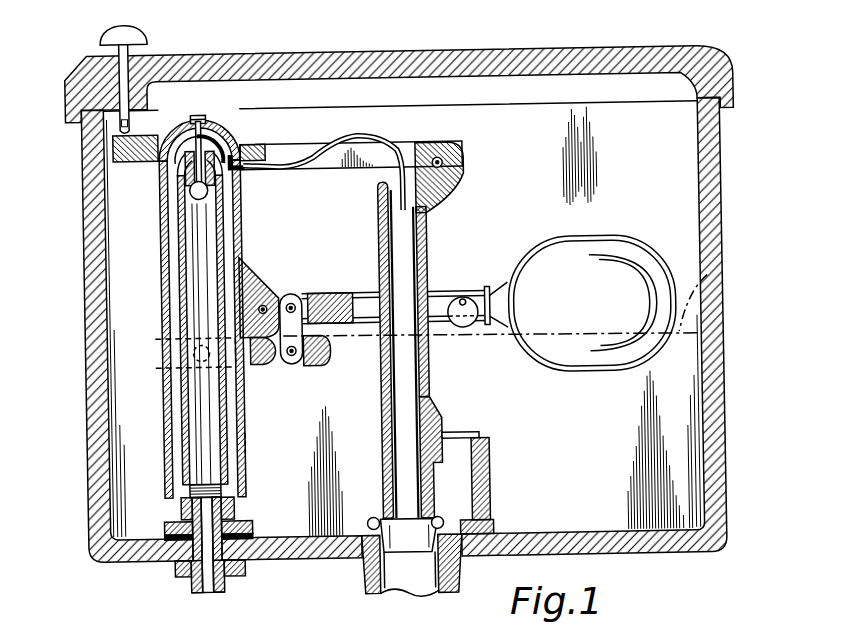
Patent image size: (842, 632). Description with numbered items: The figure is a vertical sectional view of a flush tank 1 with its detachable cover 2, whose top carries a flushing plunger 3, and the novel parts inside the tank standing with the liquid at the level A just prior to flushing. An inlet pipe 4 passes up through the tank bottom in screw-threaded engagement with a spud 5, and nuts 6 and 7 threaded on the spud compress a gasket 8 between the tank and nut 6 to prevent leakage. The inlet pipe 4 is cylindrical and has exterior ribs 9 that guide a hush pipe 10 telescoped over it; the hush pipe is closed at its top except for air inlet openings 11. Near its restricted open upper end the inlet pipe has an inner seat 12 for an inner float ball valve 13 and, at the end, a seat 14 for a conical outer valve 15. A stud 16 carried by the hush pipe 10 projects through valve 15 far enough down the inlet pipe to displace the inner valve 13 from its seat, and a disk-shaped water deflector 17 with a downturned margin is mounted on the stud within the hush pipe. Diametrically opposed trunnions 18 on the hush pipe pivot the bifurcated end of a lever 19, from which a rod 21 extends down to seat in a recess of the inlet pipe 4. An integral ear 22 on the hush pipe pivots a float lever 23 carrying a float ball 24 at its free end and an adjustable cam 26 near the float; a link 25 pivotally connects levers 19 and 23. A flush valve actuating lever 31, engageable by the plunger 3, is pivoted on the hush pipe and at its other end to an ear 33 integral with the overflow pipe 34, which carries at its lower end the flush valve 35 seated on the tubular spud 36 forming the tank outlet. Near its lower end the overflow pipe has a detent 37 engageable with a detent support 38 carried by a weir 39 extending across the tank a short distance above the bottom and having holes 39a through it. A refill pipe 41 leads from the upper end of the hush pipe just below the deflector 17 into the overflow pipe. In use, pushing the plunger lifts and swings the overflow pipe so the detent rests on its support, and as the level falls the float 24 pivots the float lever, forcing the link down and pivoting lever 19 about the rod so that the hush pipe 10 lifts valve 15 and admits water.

The tank 1 is at (100, 312).
The detachable cover 2 is at (200, 58).
The flushing plunger 3 is at (139, 28).
The inlet pipe 4 is at (182, 466).
The spud 5 is at (190, 580).
The nut 6 is at (164, 518).
The nut 7 is at (175, 566).
The gasket 8 is at (249, 531).
The exterior ribs 9 is at (179, 239).
The hush pipe 10 is at (165, 196).
The air inlet openings 11 is at (181, 122).
The inner seat 12 is at (188, 164).
The inner float ball valve 13 is at (211, 185).
The seat 14 is at (243, 150).
The outer valve 15 is at (225, 144).
The stud 16 is at (208, 111).
The water deflector 17 is at (167, 132).
The trunnions 18 is at (155, 335).
The lever 19 is at (318, 362).
The rod 21 is at (243, 440).
The ear 22 is at (256, 281).
The float lever 23 is at (329, 304).
The float ball 24 is at (592, 303).
The link 25 is at (291, 363).
The adjustable cam 26 is at (463, 328).
The flush valve actuating lever 31 is at (411, 158).
The ear 33 is at (449, 147).
The overflow pipe 34 is at (429, 243).
The flush valve 35 is at (366, 517).
The tubular spud 36 is at (358, 569).
The detent 37 is at (436, 418).
The detent support 38 is at (470, 433).
The weir 39 is at (486, 461).
The holes 39a is at (490, 510).
The refill pipe 41 is at (359, 139).
The liquid level A is at (708, 280).